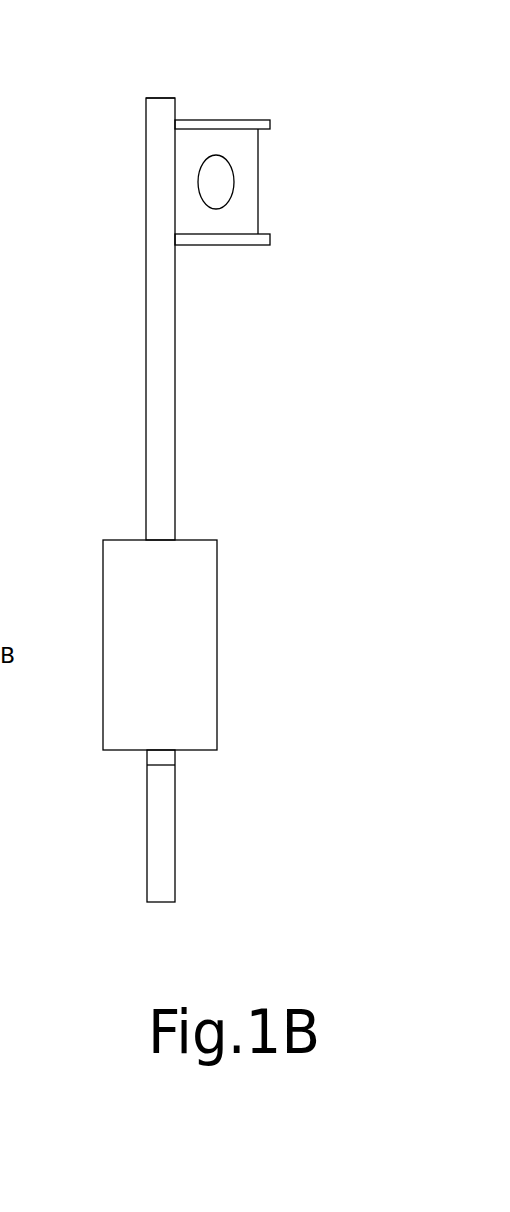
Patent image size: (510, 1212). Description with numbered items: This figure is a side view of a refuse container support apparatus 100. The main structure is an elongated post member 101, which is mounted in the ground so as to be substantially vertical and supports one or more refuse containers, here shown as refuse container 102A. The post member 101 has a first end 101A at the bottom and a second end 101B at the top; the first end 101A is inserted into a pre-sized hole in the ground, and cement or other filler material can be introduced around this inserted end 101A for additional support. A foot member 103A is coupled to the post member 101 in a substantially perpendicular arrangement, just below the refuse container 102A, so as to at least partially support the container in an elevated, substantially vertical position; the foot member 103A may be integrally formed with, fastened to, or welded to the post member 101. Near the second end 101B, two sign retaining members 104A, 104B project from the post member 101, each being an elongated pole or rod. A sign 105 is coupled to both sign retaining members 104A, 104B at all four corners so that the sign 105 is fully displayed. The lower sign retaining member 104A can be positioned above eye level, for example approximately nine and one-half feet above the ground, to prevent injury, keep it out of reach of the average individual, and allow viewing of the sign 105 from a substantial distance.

The refuse container support apparatus 100 is at (102, 168).
The elongated post member 101 is at (167, 408).
The first end 101A is at (165, 870).
The second end 101B is at (162, 110).
The refuse container 102A is at (197, 628).
The foot member 103A is at (153, 758).
The lower sign retaining member 104A is at (247, 240).
The sign retaining member 104B is at (227, 125).
The sign 105 is at (253, 153).